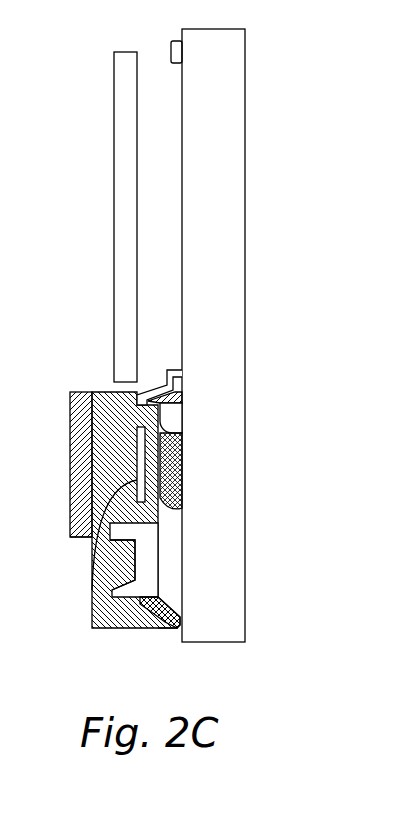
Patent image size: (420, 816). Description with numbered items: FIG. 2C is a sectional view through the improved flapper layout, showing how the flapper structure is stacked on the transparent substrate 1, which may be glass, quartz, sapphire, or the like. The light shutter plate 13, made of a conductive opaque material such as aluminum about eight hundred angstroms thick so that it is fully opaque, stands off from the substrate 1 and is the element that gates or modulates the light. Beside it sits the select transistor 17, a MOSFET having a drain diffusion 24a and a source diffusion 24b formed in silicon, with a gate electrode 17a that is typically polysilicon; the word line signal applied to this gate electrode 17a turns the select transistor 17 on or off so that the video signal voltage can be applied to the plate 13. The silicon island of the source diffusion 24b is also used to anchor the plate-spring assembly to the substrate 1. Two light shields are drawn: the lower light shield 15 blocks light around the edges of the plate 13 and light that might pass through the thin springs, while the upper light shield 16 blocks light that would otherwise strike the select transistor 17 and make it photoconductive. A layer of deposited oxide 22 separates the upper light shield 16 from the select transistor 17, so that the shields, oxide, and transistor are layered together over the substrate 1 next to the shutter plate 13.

The transparent substrate 1 is at (224, 645).
The light shutter plate 13 is at (114, 158).
The lower light shield 15 is at (172, 53).
The upper light shield 16 is at (78, 537).
The select transistor 17 is at (127, 429).
The gate electrode 17a is at (92, 588).
The layer of deposited oxide 22 is at (108, 464).
The drain diffusion 24a is at (183, 412).
The source diffusion 24b is at (183, 570).